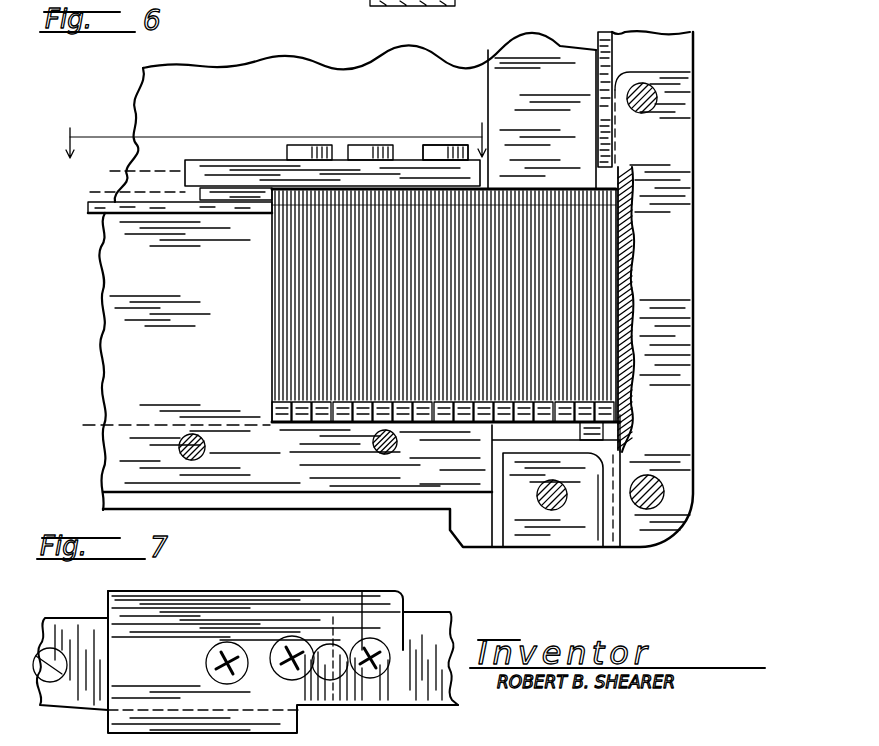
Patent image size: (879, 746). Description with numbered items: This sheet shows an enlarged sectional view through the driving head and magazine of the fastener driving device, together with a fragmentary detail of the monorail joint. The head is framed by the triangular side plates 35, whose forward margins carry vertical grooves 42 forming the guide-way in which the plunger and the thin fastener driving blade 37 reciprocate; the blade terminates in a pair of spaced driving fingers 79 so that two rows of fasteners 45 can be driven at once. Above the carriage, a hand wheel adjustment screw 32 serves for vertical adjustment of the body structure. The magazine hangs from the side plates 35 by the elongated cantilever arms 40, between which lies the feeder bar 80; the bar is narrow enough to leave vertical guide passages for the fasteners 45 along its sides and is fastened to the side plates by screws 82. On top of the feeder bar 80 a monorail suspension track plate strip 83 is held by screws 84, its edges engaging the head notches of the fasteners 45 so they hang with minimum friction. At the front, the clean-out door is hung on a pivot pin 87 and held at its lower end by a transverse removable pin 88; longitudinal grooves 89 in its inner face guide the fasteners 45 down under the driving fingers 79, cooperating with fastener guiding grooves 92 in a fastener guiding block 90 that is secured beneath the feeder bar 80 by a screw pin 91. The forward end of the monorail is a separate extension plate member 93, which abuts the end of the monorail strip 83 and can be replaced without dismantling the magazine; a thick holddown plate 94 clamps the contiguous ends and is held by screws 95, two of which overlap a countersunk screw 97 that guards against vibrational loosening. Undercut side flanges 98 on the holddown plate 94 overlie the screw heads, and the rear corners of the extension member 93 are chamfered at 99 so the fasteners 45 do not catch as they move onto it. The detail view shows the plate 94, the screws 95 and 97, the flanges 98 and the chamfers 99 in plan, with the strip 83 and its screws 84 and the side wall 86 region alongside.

In FIG. 6, the hand wheel adjustment screw 32 is at (456, 6).
In FIG. 6, the side plates 35 is at (162, 84).
In FIG. 6, the fastener driving blade 37 is at (604, 72).
In FIG. 6, the cantilever arms 40 is at (165, 178).
In FIG. 6, the vertical grooves 42 is at (494, 82).
In FIG. 6, the fasteners 45 is at (637, 312).
In FIG. 6, the driving fingers 79 is at (612, 155).
In FIG. 6, the feeder bar 80 is at (388, 289).
In FIG. 6, the screws 82 is at (203, 452).
In FIG. 6, the monorail suspension track plate strip 83 is at (148, 208).
In FIG. 7, the monorail suspension track plate strip 83 is at (75, 627).
In FIG. 7, the screws 84 is at (45, 690).
In FIG. 6, the side wall 86 is at (678, 218).
In FIG. 6, the pivot pin 87 is at (648, 98).
In FIG. 6, the transverse removable pin 88 is at (664, 494).
In FIG. 6, the longitudinal grooves 89 is at (637, 425).
In FIG. 6, the fastener guiding block 90 is at (576, 540).
In FIG. 6, the screw pin 91 is at (548, 505).
In FIG. 6, the fastener guiding grooves 92 is at (612, 525).
In FIG. 6, the extension plate member 93 is at (530, 200).
In FIG. 7, the extension plate member 93 is at (438, 612).
In FIG. 6, the holddown plate 94 is at (260, 160).
In FIG. 7, the holddown plate 94 is at (188, 640).
In FIG. 6, the screws 95 is at (435, 145).
In FIG. 7, the screws 95 is at (263, 670).
In FIG. 7, the countersunk screw 97 is at (338, 645).
In FIG. 6, the side flanges 98 is at (337, 170).
In FIG. 7, the side flanges 98 is at (385, 592).
In FIG. 7, the chamfered corners 99 is at (333, 617).